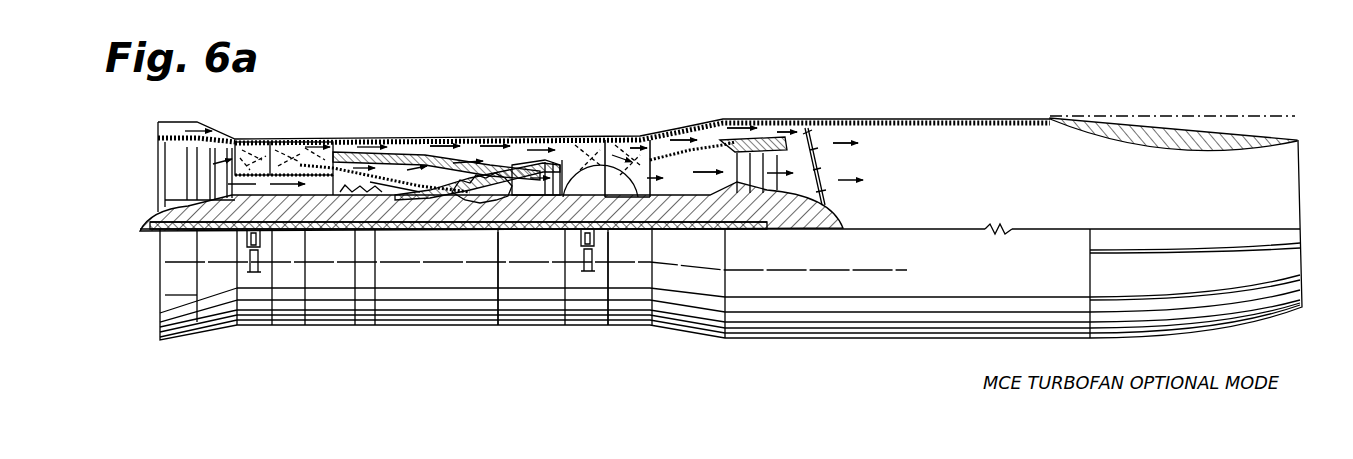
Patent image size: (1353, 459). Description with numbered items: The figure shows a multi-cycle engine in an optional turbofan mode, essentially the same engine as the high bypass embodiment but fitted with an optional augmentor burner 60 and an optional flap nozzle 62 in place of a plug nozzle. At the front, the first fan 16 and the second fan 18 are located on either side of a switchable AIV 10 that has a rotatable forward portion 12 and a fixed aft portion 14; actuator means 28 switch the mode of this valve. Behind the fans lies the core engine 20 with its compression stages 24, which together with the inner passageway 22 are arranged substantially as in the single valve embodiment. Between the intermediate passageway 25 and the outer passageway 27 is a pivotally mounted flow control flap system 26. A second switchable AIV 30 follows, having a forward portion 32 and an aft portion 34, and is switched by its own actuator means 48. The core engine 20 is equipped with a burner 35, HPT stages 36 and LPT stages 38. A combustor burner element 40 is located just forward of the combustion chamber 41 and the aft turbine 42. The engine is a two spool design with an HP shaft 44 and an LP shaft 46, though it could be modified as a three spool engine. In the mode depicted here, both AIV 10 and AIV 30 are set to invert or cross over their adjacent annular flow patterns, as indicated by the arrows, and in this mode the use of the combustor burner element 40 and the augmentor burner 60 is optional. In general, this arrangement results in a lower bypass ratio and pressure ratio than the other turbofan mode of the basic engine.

The switchable AIV 10 is at (280, 130).
The rotatable forward portion 12 is at (257, 141).
The fixed aft portion 14 is at (300, 150).
The Fan 1 16 is at (190, 175).
The Fan 2 18 is at (340, 162).
The core engine 20 is at (500, 155).
The inner passageway 22 is at (282, 225).
The compression stages 24 is at (395, 185).
The intermediate passageway 25 is at (445, 165).
The flow control flap system 26 is at (465, 140).
The outer passageway 27 is at (415, 150).
The actuator means 28 is at (248, 257).
The second switchable AIV 30 is at (613, 128).
The forward portion 32 is at (590, 140).
The aft portion 34 is at (650, 140).
The burner 35 is at (500, 170).
The HPT stages 36 is at (535, 160).
The LPT stages 38 is at (560, 142).
The combustor burner element 40 is at (630, 225).
The combustion chamber 41 is at (695, 165).
The aft turbine 42 is at (783, 150).
The HP shaft 44 is at (745, 228).
The LP shaft 46 is at (470, 229).
The actuator means 48 is at (584, 262).
The augmentor burner 60 is at (822, 163).
The flap nozzle 62 is at (1293, 137).